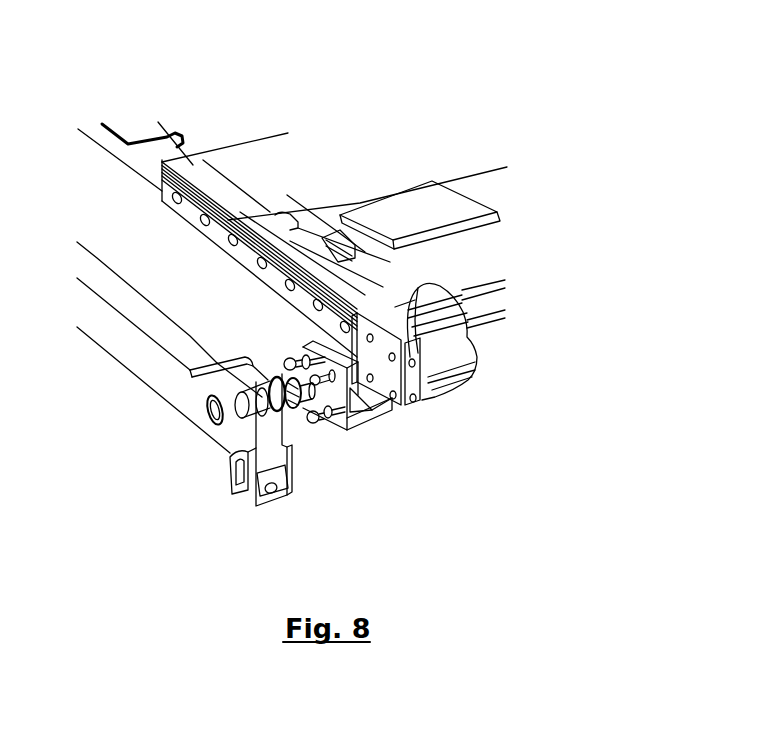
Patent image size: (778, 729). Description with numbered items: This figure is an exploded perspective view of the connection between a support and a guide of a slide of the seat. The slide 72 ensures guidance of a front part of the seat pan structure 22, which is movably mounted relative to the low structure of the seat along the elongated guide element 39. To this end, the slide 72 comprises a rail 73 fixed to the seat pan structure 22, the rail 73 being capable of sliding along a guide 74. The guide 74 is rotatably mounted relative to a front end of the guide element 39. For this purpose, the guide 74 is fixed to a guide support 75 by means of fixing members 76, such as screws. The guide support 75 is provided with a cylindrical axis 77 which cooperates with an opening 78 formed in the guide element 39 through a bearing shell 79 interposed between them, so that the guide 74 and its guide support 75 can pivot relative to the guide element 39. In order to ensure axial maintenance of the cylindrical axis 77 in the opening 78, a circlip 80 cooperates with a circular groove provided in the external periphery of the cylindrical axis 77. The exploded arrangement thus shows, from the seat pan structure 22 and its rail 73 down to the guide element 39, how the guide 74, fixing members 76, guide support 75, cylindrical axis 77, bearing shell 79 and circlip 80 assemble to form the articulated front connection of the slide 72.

The seat pan structure 22 is at (430, 207).
The guide element 39 is at (96, 271).
The slide 72 is at (450, 425).
The rail 73 is at (186, 225).
The guide 74 is at (416, 288).
The guide support 75 is at (363, 423).
The fixing members 76 is at (290, 357).
The cylindrical axis 77 is at (272, 372).
The opening 78 is at (252, 428).
The bearing shell 79 is at (297, 423).
The circlip 80 is at (207, 408).